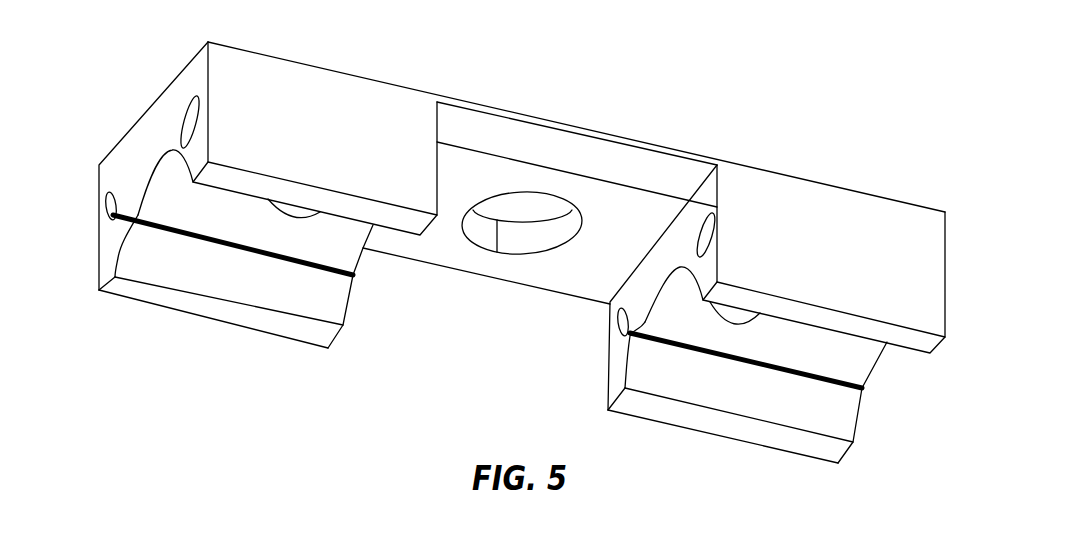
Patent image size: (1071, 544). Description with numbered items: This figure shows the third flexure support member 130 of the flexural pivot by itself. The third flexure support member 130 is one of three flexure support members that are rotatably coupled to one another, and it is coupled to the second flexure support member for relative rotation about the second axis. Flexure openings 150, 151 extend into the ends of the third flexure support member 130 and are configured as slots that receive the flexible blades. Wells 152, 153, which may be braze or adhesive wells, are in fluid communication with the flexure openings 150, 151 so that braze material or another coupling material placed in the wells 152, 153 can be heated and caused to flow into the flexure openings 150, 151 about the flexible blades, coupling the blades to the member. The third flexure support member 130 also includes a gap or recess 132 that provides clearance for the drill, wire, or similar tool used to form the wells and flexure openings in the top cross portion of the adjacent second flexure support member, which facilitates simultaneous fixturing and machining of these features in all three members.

The third flexure support member 130 is at (790, 102).
The gap or recess 132 is at (628, 207).
The flexure opening 150 is at (202, 243).
The flexure opening 151 is at (177, 128).
The well 152 is at (107, 225).
The well 153 is at (193, 92).